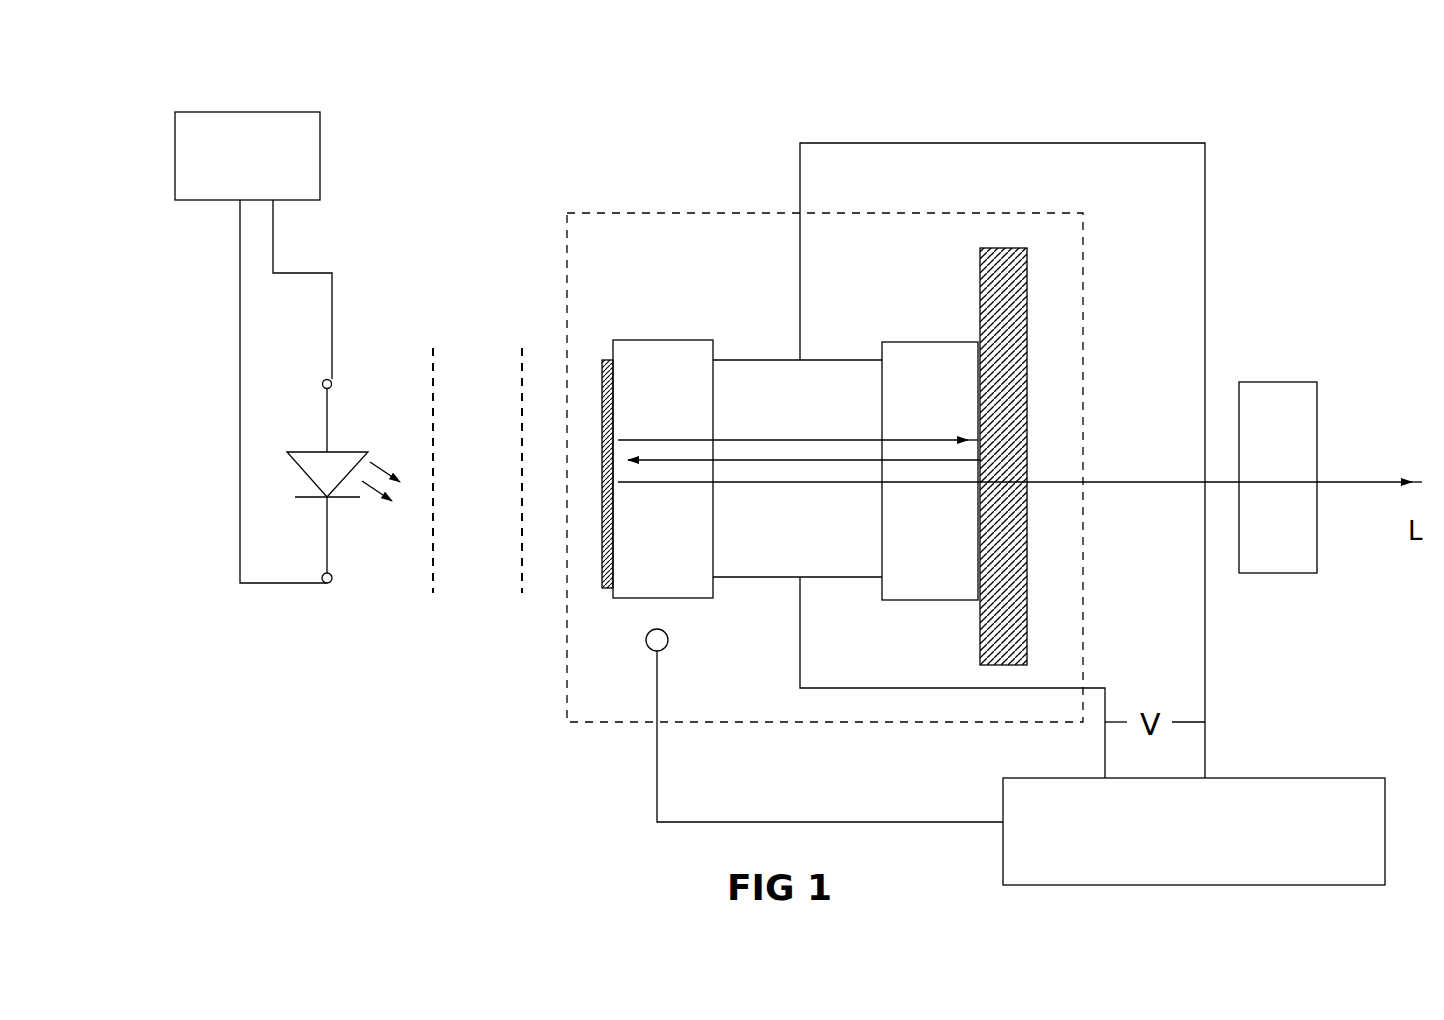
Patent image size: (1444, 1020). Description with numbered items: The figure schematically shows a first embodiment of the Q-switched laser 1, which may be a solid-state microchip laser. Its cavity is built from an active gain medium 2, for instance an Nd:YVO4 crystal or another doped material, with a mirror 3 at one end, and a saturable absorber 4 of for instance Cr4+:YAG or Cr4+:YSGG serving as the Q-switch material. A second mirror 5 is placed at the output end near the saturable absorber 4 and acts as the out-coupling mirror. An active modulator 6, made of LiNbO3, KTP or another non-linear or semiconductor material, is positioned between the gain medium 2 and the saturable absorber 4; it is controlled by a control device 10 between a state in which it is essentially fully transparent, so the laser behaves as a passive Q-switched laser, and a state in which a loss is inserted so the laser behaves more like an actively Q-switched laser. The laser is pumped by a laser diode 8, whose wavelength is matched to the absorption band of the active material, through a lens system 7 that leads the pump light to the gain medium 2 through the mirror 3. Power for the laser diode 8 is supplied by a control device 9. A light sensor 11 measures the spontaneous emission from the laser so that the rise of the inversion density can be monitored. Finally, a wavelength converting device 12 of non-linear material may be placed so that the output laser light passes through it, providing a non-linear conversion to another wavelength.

The Q-switched laser 1 is at (567, 273).
The active gain medium 2 is at (645, 338).
The mirror 3 is at (603, 565).
The saturable absorber 4 is at (925, 340).
The second mirror 5 is at (1028, 330).
The active modulator 6 is at (745, 360).
The lens system 7 is at (465, 335).
The laser diode 8 is at (345, 510).
The control device 9 is at (228, 112).
The control device 10 is at (1262, 778).
The light sensor 11 is at (824, 725).
The wavelength converting device 12 is at (1282, 382).